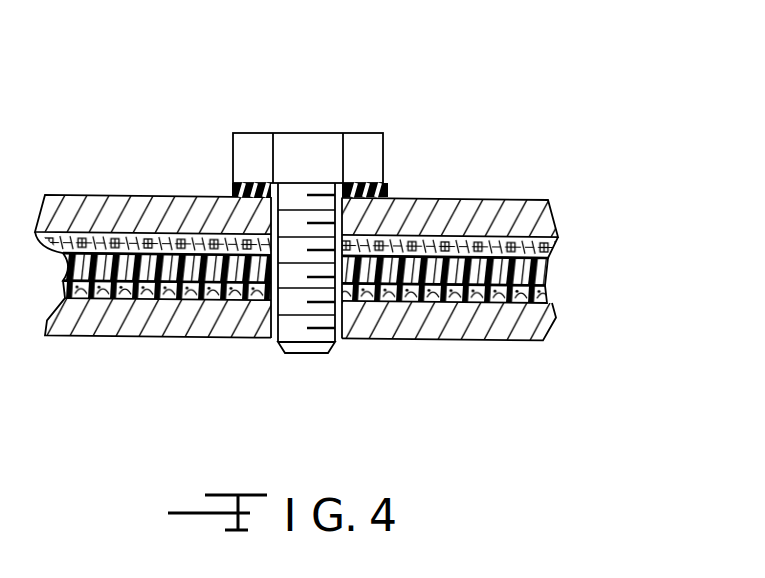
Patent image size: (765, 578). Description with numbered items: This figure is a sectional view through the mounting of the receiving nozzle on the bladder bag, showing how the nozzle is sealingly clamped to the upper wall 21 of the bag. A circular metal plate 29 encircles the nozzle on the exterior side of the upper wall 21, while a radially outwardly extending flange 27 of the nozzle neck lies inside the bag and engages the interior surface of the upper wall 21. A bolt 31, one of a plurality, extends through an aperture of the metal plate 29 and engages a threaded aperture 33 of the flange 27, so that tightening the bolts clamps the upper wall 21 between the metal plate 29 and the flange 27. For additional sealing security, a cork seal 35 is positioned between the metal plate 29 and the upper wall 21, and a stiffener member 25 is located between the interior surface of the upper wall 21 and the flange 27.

The upper wall 21 is at (547, 267).
The stiffener member 25 is at (547, 291).
The flange 27 is at (487, 323).
The metal plate 29 is at (435, 212).
The bolts 31 is at (305, 151).
The threaded apertures 33 is at (278, 315).
The cork seal 35 is at (553, 249).